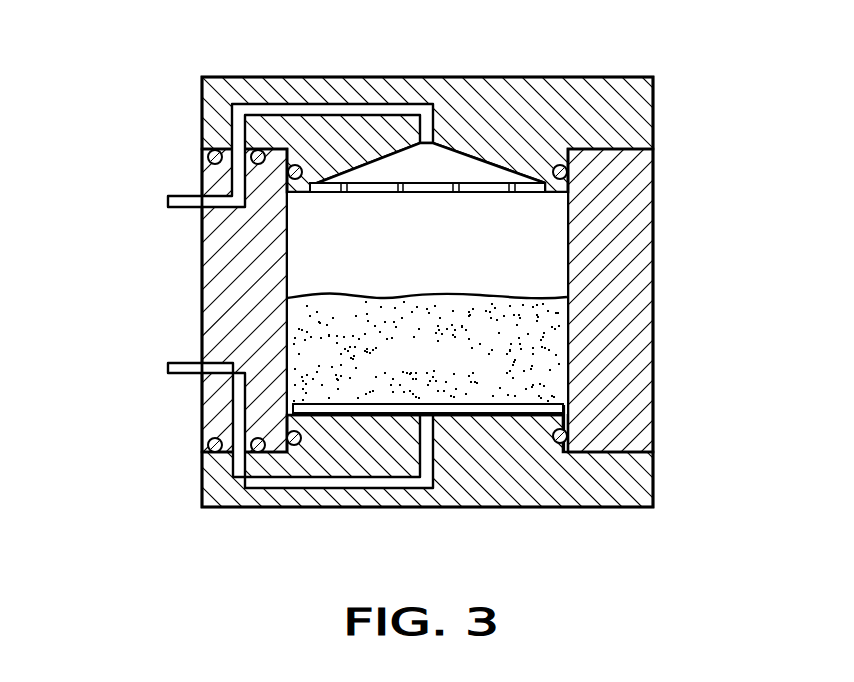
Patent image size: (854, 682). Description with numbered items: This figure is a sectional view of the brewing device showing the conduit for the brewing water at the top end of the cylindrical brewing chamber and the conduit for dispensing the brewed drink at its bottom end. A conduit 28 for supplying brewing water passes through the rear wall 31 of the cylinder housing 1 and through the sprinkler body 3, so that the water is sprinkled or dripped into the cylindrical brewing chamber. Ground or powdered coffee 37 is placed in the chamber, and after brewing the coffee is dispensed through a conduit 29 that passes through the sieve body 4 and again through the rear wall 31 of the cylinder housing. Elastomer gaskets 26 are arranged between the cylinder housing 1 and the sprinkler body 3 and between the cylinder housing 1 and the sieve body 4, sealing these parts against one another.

The cylinder housing 1 is at (612, 222).
The sprinkler body 3 is at (553, 105).
The sieve body 4 is at (543, 467).
The elastomer gaskets 26 is at (203, 158).
The conduit for supplying brewing water 28 is at (150, 203).
The conduit for dispensing brewed coffee 29 is at (163, 368).
The rear wall 31 is at (213, 398).
The ground or powdered coffee 37 is at (532, 362).